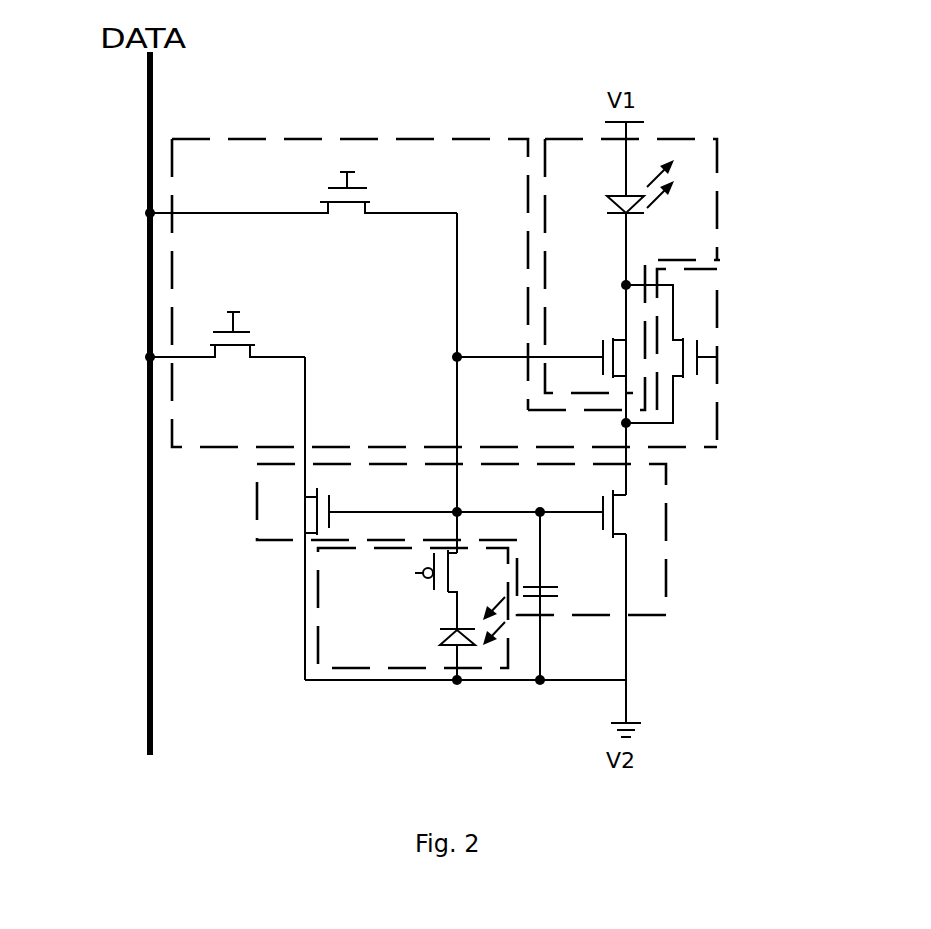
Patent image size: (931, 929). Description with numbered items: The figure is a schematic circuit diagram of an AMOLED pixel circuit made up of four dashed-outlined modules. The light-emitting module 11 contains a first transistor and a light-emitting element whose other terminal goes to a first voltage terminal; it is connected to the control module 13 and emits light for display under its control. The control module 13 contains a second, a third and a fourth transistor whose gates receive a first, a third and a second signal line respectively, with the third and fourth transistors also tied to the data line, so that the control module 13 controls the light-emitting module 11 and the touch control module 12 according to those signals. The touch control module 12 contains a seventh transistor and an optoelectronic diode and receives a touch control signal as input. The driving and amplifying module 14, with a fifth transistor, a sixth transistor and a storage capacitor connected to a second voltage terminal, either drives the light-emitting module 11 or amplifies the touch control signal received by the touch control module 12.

The light-emitting module 11 is at (607, 145).
The touch control module 12 is at (338, 637).
The control module 13 is at (187, 177).
The driving and amplifying module 14 is at (262, 518).